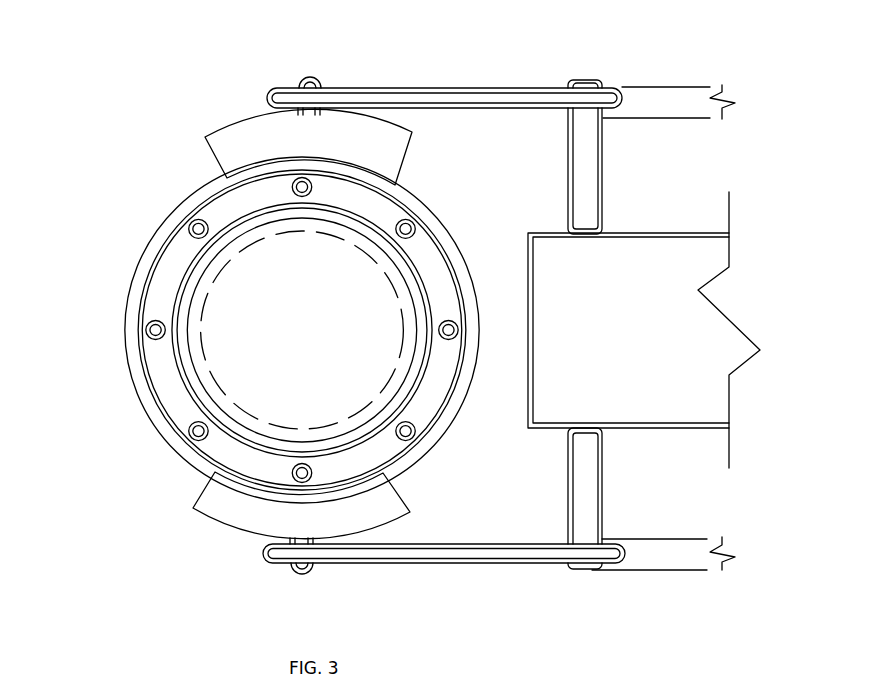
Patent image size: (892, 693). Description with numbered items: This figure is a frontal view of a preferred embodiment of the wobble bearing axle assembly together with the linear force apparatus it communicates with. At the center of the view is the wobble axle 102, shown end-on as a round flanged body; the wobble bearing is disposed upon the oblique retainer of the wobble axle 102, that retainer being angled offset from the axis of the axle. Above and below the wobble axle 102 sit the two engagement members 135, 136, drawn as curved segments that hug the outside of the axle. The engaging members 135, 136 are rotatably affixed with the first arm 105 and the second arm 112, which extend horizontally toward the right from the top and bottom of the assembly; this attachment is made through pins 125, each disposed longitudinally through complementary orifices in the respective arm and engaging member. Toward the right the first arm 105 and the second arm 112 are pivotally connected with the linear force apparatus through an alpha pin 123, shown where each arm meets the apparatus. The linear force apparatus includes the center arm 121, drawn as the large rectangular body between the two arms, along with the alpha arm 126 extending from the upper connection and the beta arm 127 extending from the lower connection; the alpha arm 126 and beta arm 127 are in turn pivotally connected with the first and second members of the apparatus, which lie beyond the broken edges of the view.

The wobble axle 102 is at (208, 363).
The first arm 105 is at (440, 87).
The second arm 112 is at (458, 564).
The center arm 121 is at (644, 330).
The alpha pin 123 is at (603, 165).
The pins 125 is at (300, 79).
The alpha arm 126 is at (669, 102).
The beta arm 127 is at (663, 553).
The engagement member 135 is at (308, 146).
The engagement member 136 is at (301, 508).